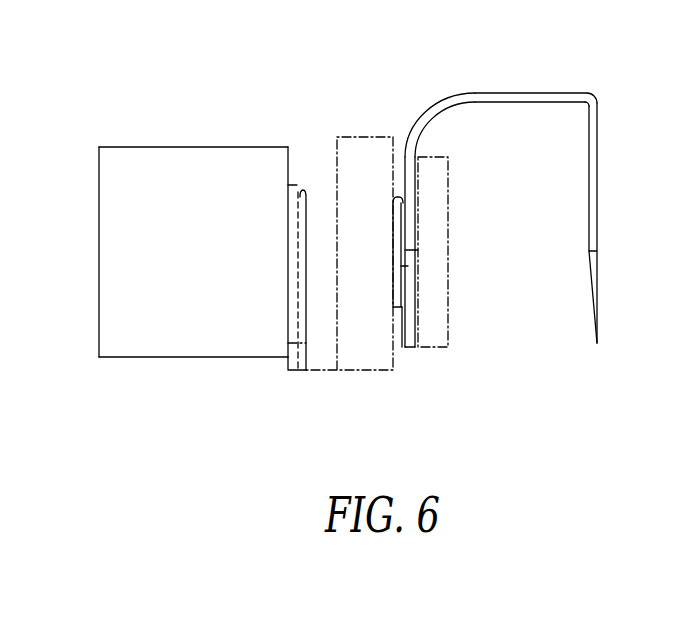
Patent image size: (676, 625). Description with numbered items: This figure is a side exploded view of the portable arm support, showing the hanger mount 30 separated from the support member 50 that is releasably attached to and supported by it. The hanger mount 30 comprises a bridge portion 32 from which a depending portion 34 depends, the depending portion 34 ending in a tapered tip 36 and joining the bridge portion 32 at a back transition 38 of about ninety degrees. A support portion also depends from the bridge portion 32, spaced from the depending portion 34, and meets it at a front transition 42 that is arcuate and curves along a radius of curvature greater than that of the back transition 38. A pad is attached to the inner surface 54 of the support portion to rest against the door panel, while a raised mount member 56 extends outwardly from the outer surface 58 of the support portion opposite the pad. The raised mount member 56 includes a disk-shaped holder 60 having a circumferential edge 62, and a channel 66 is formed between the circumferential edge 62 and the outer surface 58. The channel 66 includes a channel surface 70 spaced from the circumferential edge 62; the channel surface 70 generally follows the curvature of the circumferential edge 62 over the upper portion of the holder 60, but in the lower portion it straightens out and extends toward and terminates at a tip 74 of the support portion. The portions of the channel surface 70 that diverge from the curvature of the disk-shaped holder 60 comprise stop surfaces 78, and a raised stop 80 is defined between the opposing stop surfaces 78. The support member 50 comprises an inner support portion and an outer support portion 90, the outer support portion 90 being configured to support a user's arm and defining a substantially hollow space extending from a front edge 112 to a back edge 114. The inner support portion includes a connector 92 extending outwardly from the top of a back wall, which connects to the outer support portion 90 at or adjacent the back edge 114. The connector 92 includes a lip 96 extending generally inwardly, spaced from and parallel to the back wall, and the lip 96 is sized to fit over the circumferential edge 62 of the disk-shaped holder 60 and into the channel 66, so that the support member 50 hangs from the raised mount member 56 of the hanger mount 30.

The hanger mount 30 is at (509, 223).
The bridge portion 32 is at (516, 92).
The depending portion 34 is at (598, 190).
The tapered tip 36 is at (598, 343).
The back transition 38 is at (601, 98).
The front transition 42 is at (449, 112).
The support member 50 is at (161, 233).
The inner surface 54 is at (421, 157).
The raised mount member 56 is at (390, 250).
The outer surface 58 is at (423, 106).
The disk-shaped holder 60 is at (419, 269).
The circumferential edge 62 is at (401, 202).
The channel 66 is at (404, 195).
The channel surface 70 is at (411, 211).
The tip 74 is at (413, 350).
The stop surfaces 78 is at (403, 347).
The raised stop 80 is at (401, 318).
The outer support portion 90 is at (155, 262).
The connector 92 is at (279, 244).
The lip 96 is at (306, 347).
The front edge 112 is at (99, 177).
The back edge 114 is at (290, 158).